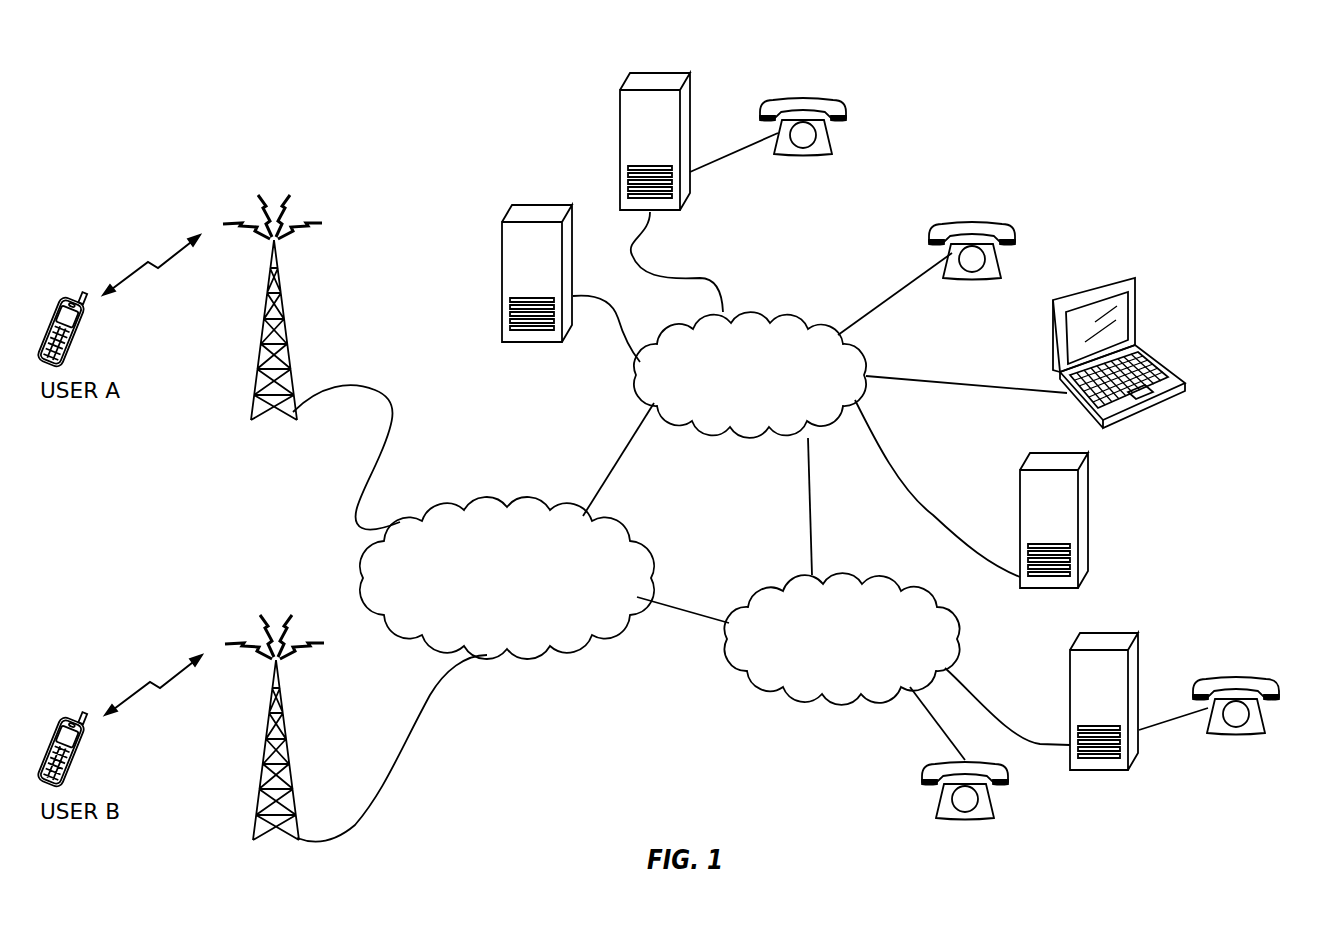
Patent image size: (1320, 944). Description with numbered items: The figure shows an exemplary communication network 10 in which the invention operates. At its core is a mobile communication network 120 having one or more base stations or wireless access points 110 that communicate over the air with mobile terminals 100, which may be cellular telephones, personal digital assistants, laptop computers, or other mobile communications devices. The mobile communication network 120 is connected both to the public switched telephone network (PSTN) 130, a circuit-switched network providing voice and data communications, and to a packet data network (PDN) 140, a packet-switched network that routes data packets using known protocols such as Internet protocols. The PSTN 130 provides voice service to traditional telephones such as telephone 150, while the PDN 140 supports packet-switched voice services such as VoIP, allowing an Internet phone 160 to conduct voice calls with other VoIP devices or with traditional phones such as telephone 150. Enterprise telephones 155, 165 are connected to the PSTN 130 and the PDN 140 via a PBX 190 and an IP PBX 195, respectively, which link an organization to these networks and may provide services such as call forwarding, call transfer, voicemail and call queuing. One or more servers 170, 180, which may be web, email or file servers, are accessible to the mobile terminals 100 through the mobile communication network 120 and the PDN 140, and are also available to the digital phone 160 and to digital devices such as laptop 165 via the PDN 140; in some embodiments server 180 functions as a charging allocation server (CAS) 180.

The communication network 10 is at (972, 92).
The mobile terminal 100 is at (74, 350).
The base station 110 is at (287, 340).
The mobile communication network 120 is at (523, 630).
The public switched telephone network 130 is at (865, 662).
The packet data network 140 is at (768, 399).
The telephone 150 is at (975, 818).
The enterprise telephone 155 is at (1243, 677).
The Internet phone 160 is at (977, 223).
The enterprise telephone / laptop 165 is at (808, 98).
The server 170 is at (1089, 495).
The charging allocation server 180 is at (502, 244).
The PBX 190 is at (1070, 672).
The IP PBX 195 is at (620, 110).